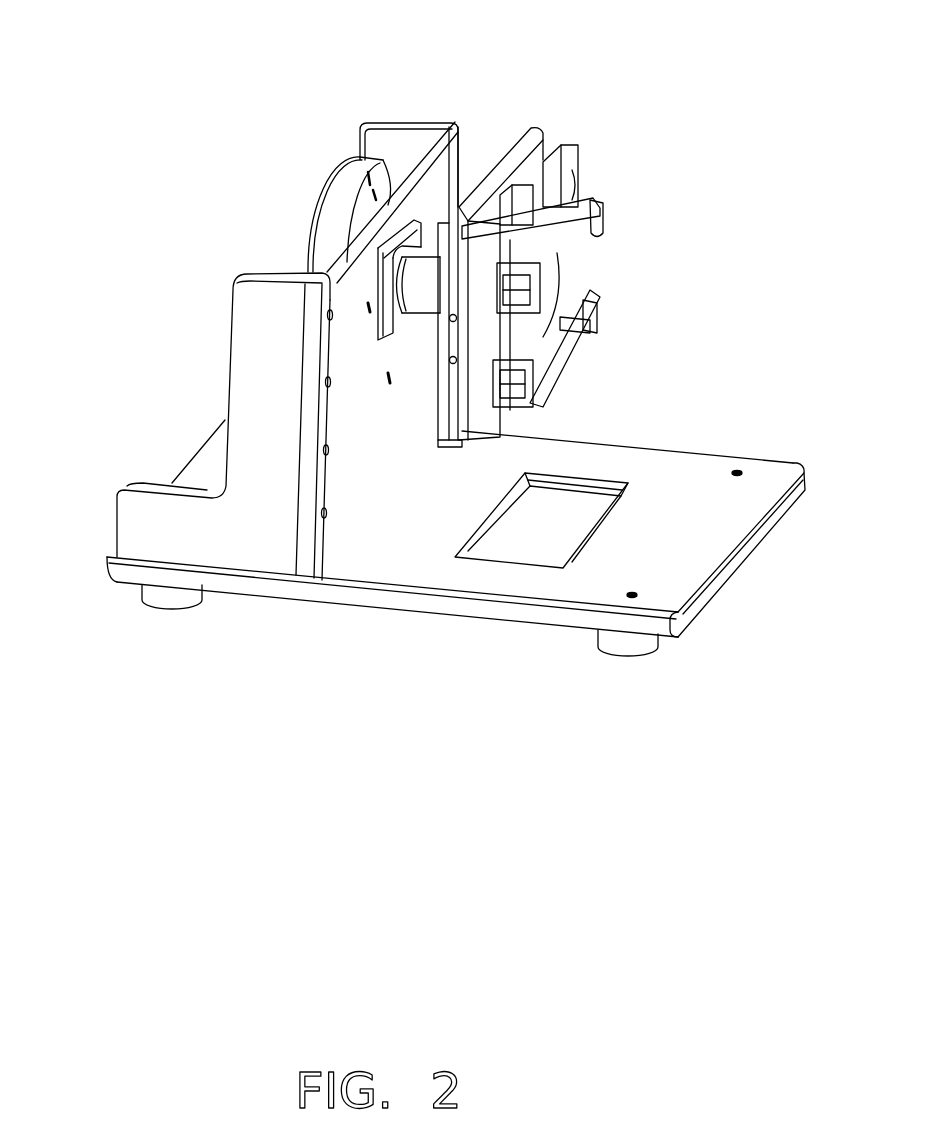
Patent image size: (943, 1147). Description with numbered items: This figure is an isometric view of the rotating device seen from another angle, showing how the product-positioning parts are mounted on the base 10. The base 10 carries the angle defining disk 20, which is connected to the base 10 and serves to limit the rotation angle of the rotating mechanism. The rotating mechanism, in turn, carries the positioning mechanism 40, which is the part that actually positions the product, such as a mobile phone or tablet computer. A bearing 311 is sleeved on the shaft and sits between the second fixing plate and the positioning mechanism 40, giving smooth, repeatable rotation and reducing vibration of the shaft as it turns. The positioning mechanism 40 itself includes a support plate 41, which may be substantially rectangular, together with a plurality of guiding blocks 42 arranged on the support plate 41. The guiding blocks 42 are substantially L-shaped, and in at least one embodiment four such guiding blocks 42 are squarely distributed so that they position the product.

The base 10 is at (153, 517).
The angle defining disk 20 is at (348, 182).
The bearing 311 is at (429, 277).
The positioning mechanism 40 is at (667, 60).
The support plate 41 is at (552, 152).
The guiding blocks 42 is at (596, 312).